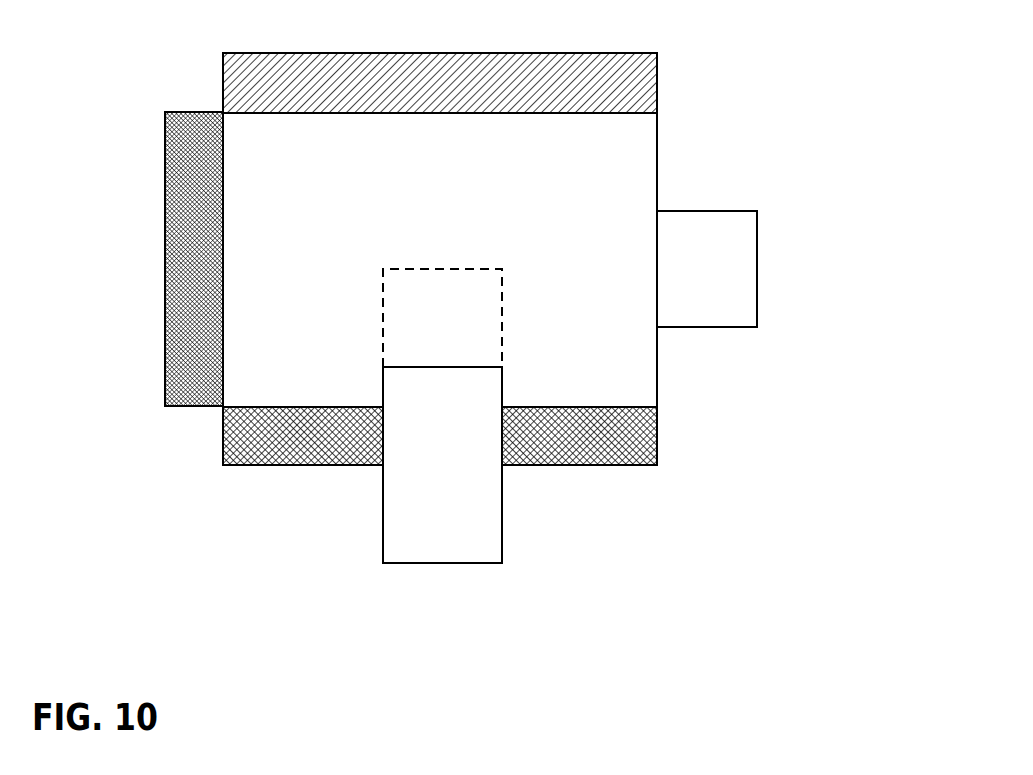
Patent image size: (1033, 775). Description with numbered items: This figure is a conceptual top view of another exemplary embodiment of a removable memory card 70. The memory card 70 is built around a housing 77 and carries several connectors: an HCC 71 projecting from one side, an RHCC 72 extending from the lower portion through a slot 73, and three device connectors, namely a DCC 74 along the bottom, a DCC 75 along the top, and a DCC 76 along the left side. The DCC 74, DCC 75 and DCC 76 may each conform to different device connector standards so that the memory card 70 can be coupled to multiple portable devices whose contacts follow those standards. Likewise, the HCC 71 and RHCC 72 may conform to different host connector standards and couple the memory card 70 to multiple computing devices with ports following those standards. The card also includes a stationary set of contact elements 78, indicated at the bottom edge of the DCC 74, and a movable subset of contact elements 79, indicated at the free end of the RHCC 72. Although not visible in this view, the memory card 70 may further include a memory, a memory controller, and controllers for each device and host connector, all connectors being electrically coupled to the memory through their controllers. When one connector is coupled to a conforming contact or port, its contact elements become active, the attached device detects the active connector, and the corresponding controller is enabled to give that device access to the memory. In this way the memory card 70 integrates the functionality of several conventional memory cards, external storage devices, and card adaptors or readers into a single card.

The removable memory card 70 is at (427, 209).
The HCC 71 is at (692, 296).
The RHCC 72 is at (427, 549).
The slot 73 is at (428, 334).
The DCC 74 is at (258, 461).
The DCC 75 is at (427, 108).
The DCC 76 is at (220, 243).
The housing 77 is at (632, 382).
The stationary set of contact elements 78 is at (600, 465).
The movable subset of contact elements 79 is at (427, 563).